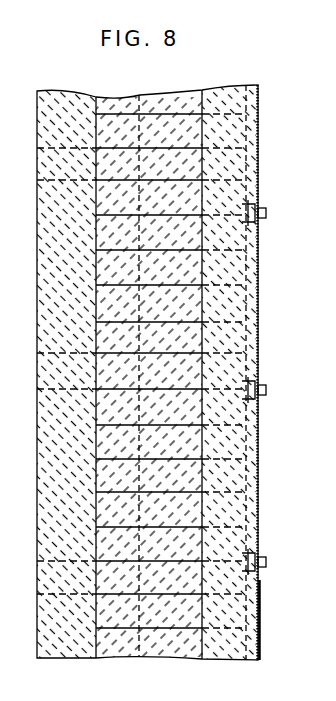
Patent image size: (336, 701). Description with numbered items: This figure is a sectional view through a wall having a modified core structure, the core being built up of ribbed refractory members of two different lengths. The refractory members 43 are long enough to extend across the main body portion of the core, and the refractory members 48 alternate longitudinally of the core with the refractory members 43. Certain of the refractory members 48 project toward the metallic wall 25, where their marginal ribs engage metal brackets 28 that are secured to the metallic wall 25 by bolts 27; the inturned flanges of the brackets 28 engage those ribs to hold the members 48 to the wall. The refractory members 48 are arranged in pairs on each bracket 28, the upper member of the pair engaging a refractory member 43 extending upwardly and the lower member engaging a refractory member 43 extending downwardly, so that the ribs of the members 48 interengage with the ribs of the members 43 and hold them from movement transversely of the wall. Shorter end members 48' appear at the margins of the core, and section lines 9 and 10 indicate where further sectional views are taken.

The section line 9- 9 is at (17, 117).
The section line 10- 10 is at (18, 266).
The metallic wall 25 is at (262, 435).
The bolt 27 is at (266, 562).
The metal bracket 28 is at (262, 192).
The refractory member 43 is at (0, 230).
The refractory member 48 is at (182, 372).
The end tile 48' is at (52, 371).